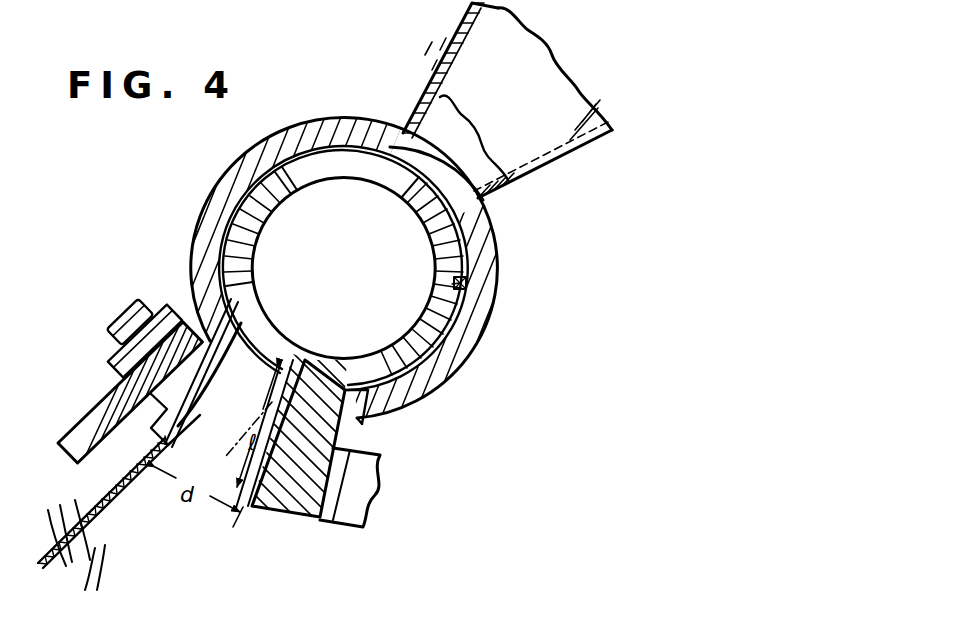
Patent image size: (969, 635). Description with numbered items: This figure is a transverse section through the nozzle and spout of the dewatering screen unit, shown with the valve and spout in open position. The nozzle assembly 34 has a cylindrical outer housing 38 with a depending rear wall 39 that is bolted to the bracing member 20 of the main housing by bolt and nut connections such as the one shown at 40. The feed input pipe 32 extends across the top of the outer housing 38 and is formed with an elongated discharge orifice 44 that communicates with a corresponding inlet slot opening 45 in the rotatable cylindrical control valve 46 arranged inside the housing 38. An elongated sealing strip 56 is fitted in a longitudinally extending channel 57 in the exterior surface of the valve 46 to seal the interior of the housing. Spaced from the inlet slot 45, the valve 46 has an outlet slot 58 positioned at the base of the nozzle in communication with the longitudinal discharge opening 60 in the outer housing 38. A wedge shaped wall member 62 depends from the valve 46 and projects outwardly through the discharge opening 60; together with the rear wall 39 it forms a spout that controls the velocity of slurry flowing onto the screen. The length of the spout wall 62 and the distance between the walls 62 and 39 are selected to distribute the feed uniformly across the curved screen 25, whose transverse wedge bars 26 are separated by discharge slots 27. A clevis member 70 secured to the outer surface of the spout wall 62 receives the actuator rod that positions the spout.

The bracing member 20 is at (76, 432).
The curved screen or sieve bend 25 is at (90, 527).
The transverse wedge bars 26 is at (83, 572).
The discharge slots 27 is at (72, 518).
The feed input pipe 32 is at (462, 58).
The nozzle assembly 34 is at (542, 261).
The cylindrical outer housing 38 is at (474, 313).
The depending rear wall 39 is at (182, 418).
The bolt and nut connection 40 is at (148, 302).
The elongated discharge orifice 44 is at (446, 176).
The inlet slot opening 45 is at (373, 172).
The rotatable cylindrical control valve 46 is at (449, 262).
The elongated sealing strip 56 is at (467, 285).
The longitudinally extending channel 57 is at (456, 284).
The outlet slot 58 is at (263, 331).
The longitudinal discharge opening 60 is at (296, 361).
The wedge shaped wall member 62 is at (292, 516).
The clevis member 70 is at (350, 527).